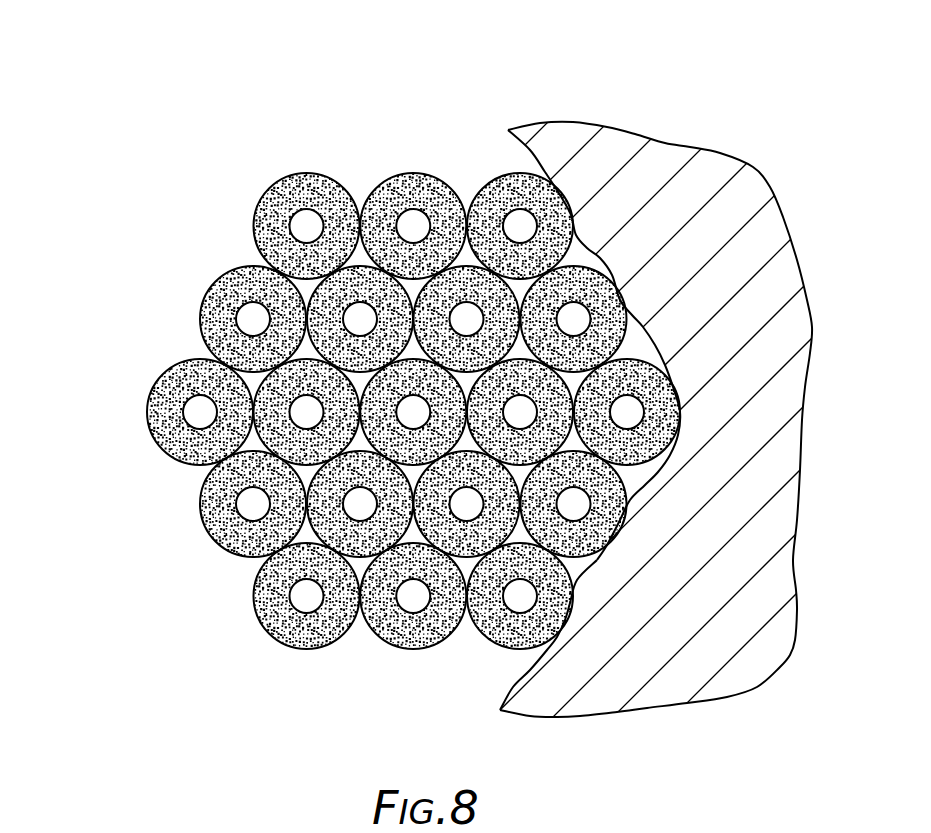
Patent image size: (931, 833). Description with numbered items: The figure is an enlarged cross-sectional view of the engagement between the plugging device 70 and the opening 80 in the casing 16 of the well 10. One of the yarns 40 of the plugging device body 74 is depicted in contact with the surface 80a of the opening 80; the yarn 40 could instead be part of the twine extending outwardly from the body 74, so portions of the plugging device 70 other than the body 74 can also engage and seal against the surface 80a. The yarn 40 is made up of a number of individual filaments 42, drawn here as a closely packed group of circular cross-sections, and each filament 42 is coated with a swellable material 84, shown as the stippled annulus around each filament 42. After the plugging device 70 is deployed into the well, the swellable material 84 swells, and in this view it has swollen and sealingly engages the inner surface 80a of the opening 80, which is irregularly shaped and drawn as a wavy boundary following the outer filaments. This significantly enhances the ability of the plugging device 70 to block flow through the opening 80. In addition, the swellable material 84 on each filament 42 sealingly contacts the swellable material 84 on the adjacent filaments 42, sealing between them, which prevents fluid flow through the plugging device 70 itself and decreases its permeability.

The device 10 is at (693, 78).
The casing 16 is at (660, 709).
The yarn 40 is at (197, 507).
The filament 42 is at (501, 207).
The plugging device 70 is at (173, 683).
The body 74 is at (207, 268).
The opening 80 is at (510, 133).
The surface 80a is at (512, 688).
The swellable material 84 is at (318, 173).